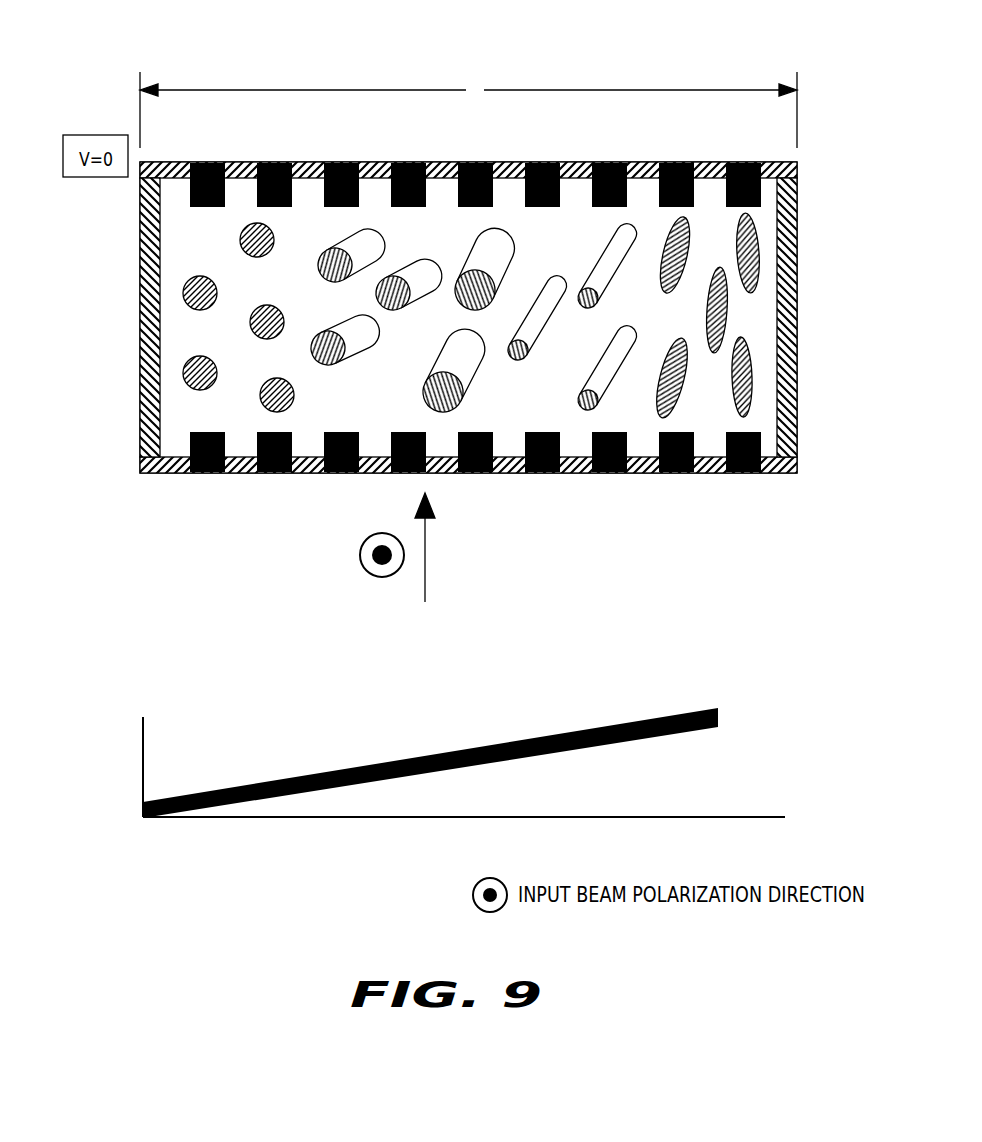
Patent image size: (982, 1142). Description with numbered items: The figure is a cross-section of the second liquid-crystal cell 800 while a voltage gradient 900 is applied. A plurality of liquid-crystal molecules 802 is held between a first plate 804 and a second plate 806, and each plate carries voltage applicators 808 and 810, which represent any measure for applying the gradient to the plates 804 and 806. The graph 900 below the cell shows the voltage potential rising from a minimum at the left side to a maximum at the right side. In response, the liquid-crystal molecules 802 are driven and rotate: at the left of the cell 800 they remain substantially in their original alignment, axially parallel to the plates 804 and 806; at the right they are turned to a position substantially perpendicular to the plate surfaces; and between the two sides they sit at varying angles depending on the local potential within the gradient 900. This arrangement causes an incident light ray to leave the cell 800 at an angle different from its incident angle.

The second liquid-crystal cell 800 is at (213, 56).
The liquid-crystal molecules 802 is at (184, 370).
The first plate 804 is at (703, 163).
The second plate 806 is at (781, 474).
The voltage applicators 808 is at (340, 168).
The voltage applicators 810 is at (613, 458).
The voltage gradient 900 is at (120, 791).